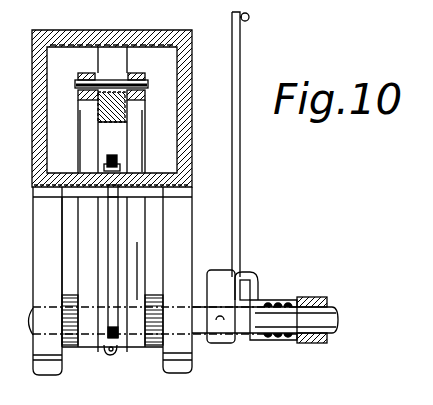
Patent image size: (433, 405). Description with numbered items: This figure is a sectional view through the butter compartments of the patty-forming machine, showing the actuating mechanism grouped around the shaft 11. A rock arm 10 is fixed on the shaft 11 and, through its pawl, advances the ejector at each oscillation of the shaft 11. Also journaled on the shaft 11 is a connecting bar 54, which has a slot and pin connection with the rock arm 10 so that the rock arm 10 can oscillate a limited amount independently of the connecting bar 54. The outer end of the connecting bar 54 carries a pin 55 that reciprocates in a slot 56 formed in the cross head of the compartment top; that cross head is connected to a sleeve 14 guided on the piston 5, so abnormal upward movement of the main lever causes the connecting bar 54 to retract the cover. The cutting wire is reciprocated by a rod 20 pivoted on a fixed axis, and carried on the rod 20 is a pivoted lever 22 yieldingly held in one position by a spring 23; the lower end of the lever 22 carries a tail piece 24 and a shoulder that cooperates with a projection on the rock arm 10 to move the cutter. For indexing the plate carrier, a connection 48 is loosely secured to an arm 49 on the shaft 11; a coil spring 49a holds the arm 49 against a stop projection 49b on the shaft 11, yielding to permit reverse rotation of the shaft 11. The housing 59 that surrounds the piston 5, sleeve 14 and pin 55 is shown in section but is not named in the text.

The piston 5 is at (100, 113).
The rock arm 10 is at (104, 345).
The shaft 11 is at (308, 318).
The sleeve 14 is at (125, 115).
The rod 20 is at (113, 197).
The pivoted lever 22 is at (112, 262).
The spring 23 is at (117, 162).
The tail piece 24 is at (117, 335).
The connection 48 is at (243, 20).
The arm 49 is at (240, 163).
The coil spring 49a is at (257, 272).
The stop projection 49b is at (240, 270).
The connecting bar 54 is at (87, 140).
The pin 55 is at (143, 82).
The slot 56 is at (117, 67).
The housing 59 is at (190, 88).